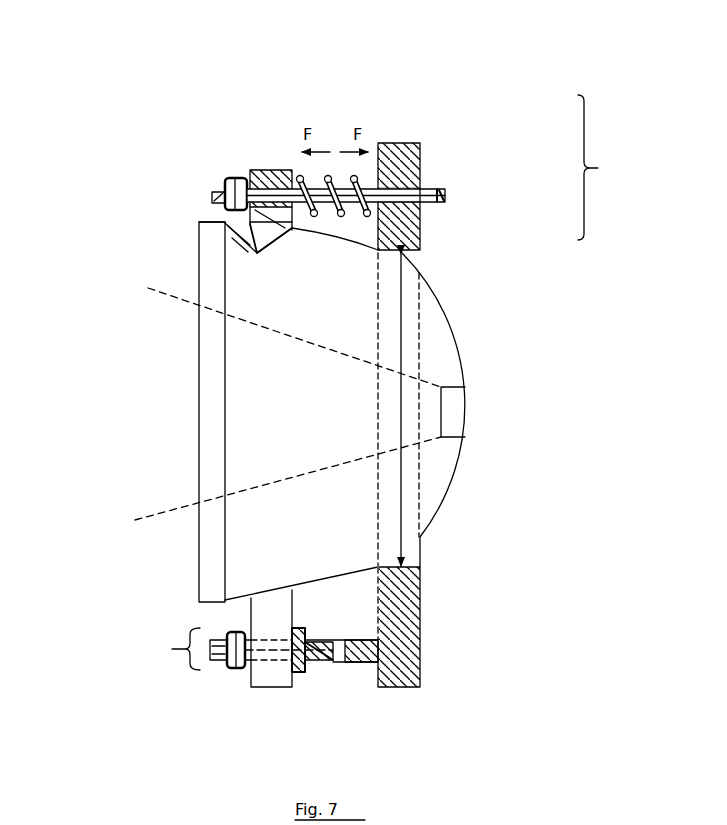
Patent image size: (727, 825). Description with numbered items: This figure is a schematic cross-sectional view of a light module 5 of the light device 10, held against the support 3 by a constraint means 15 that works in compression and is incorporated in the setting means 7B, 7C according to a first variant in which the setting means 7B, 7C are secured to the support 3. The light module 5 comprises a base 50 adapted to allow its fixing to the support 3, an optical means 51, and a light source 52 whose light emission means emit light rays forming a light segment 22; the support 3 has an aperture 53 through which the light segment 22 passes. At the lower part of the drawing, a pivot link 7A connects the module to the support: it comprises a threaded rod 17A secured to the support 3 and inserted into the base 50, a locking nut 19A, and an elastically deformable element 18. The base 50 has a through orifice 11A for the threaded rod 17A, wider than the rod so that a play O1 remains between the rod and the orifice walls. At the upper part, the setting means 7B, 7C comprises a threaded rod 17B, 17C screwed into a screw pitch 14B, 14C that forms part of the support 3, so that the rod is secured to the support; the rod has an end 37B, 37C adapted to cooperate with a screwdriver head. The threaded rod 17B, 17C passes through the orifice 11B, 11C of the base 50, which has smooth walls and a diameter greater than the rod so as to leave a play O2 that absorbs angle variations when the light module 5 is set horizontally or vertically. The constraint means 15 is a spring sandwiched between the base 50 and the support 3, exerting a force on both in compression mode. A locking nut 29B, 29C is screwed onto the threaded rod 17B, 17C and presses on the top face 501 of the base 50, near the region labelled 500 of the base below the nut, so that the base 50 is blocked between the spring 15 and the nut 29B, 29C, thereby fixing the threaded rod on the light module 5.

The light device 10 is at (305, 52).
The light segment 22 is at (186, 293).
The light module 5 is at (178, 548).
The optical means 51 is at (462, 366).
The light source 52 is at (452, 413).
The aperture 53 is at (388, 395).
The support 3 is at (425, 245).
The inclined surface 500 is at (320, 232).
The top face 501 is at (199, 230).
The orifice 11B is at (264, 159).
The orifice 11C is at (275, 168).
The locking nut 29B is at (246, 167).
The locking nut 29C is at (246, 167).
The play O2 is at (322, 160).
The constraint means 15 is at (422, 163).
The screw pitch 14B is at (472, 160).
The screw pitch 14C is at (422, 185).
The end 37B is at (492, 184).
The end 37C is at (446, 197).
The threaded rod 17B is at (472, 218).
The threaded rod 17C is at (425, 203).
The setting means 7B is at (618, 167).
The setting means 7C is at (618, 167).
The base 50 is at (262, 262).
The threaded rod 17A is at (322, 640).
The locking nut 19A is at (269, 685).
The play O1 is at (262, 680).
The through orifice 11A is at (298, 672).
The elastically deformable element 18 is at (322, 672).
The pivot link 7A is at (166, 649).